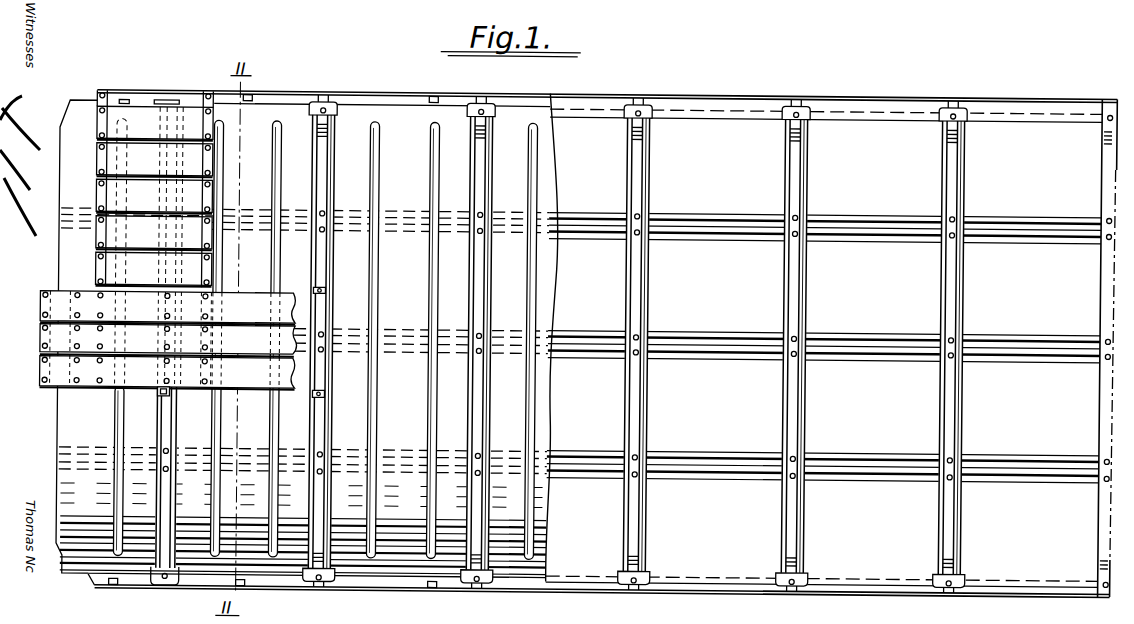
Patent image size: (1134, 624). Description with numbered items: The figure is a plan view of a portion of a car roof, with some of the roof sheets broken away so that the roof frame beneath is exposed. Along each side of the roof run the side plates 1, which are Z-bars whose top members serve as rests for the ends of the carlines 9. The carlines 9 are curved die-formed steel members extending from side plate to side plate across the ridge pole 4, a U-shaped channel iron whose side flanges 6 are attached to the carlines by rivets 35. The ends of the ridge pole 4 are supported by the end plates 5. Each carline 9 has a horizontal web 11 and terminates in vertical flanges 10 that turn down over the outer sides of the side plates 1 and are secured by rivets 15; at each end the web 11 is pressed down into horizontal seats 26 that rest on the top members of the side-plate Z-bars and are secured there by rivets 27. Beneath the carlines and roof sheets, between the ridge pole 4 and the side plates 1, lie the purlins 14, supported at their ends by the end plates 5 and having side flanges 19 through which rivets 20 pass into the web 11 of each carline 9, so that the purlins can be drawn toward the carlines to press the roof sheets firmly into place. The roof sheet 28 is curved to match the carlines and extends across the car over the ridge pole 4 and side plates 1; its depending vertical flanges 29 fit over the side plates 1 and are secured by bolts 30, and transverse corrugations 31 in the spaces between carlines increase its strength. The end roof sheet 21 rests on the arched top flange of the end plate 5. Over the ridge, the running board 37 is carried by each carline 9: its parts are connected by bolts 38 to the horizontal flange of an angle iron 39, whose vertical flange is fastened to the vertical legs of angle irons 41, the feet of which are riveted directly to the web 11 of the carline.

The side plate 1 is at (709, 99).
The ridge pole 4 is at (750, 344).
The end plate 5 is at (59, 268).
The side flange 6 is at (690, 332).
The carline 9 is at (490, 291).
The vertical flange 10 is at (803, 103).
The horizontal web 11 is at (631, 522).
The purlin 14 is at (885, 213).
The rivet 15 is at (951, 102).
The side flange 19 is at (682, 211).
The rivet 20 is at (634, 215).
The end roof sheet 21 is at (93, 418).
The horizontal seat 26 is at (326, 106).
The rivet 27 is at (314, 111).
The roof sheet 28 is at (571, 156).
The depending vertical flange 29 is at (431, 102).
The bolt 30 is at (246, 100).
The transverse corrugation 31 is at (426, 417).
The rivet 35 is at (477, 337).
The running board 37 is at (254, 303).
The bolt 38 is at (164, 320).
The angle iron 39 is at (168, 398).
The angle iron 41 is at (322, 292).